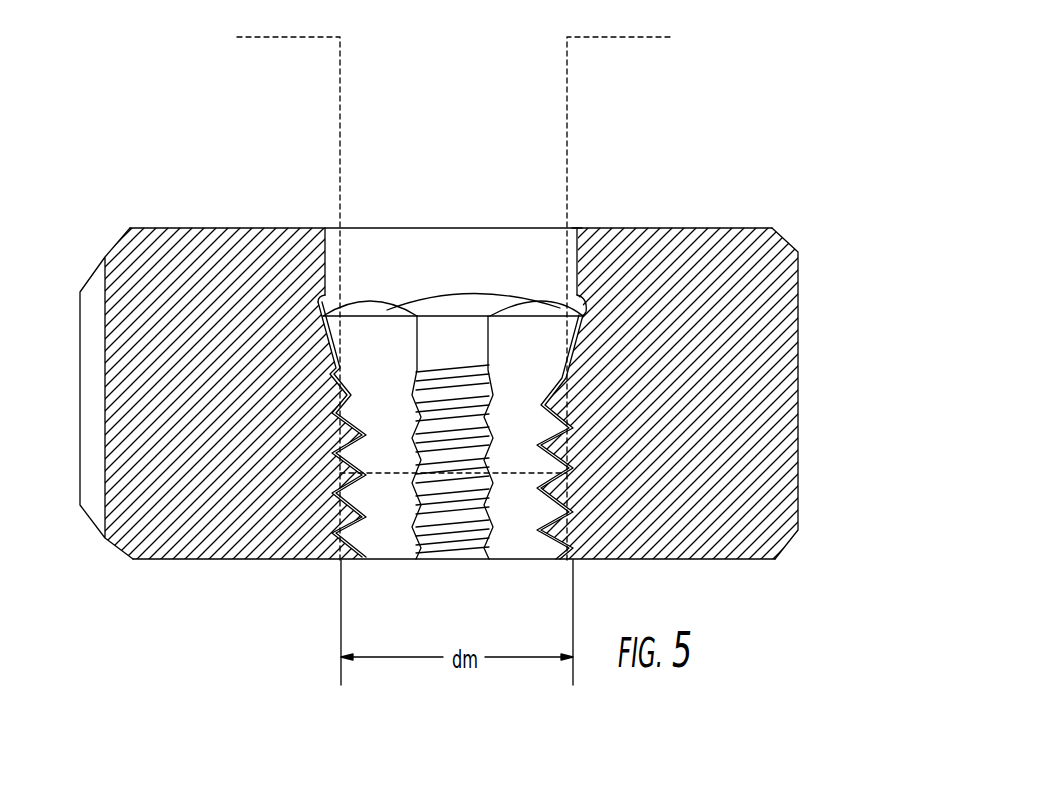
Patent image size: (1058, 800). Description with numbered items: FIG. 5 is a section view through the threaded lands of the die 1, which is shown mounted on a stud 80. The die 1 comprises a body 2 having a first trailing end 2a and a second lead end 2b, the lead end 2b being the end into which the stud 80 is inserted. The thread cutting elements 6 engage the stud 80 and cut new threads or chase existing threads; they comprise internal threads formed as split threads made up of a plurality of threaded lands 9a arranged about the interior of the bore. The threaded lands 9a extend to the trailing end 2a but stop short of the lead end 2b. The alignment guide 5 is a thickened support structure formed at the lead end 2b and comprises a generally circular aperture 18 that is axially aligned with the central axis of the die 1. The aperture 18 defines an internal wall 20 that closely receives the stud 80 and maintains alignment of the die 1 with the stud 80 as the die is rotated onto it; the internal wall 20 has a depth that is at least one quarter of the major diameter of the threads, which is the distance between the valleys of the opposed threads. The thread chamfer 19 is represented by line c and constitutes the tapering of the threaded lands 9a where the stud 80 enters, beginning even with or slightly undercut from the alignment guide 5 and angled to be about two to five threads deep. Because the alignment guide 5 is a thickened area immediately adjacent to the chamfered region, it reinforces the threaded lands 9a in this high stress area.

The die 1 is at (838, 257).
The body 2 is at (783, 358).
The first trailing end 2a is at (720, 578).
The second lead end 2b is at (261, 215).
The alignment guide 5 is at (572, 222).
The thread cutting elements 6 is at (490, 597).
The threaded lands 9a is at (363, 527).
The aperture 18 is at (335, 241).
The thread chamfer 19 is at (327, 329).
The internal wall 20 is at (448, 253).
The stud 80 is at (567, 95).
The line C-C c is at (306, 282).